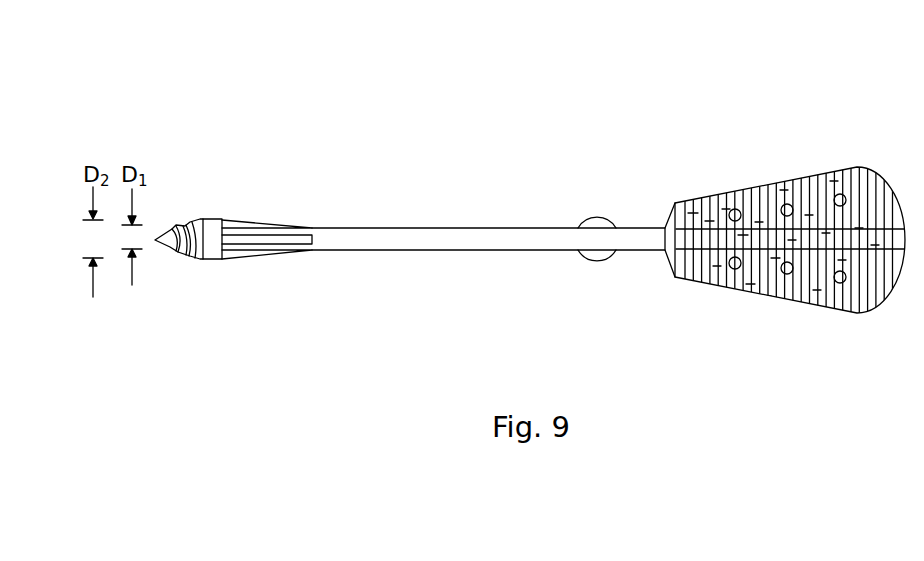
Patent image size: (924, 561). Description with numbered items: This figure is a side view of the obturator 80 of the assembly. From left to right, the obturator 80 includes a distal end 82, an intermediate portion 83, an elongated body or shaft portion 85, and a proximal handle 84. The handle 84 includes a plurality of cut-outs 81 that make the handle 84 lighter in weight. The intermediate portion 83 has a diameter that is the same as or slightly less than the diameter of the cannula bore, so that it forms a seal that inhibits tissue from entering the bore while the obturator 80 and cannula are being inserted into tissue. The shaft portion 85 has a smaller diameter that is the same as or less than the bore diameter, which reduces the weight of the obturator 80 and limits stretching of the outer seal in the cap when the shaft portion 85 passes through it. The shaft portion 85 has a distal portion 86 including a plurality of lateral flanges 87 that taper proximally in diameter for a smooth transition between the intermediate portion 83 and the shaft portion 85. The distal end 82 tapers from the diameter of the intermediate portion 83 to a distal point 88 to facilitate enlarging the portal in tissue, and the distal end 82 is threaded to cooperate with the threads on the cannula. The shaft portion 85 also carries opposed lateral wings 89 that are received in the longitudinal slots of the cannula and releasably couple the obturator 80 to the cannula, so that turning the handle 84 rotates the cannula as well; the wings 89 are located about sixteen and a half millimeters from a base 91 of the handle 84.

The obturator 80 is at (529, 114).
The cut-outs 81 is at (812, 170).
The distal end 82 is at (197, 218).
The intermediate portion 83 is at (218, 220).
The proximal handle 84 is at (773, 182).
The shaft portion 85 is at (422, 226).
The distal portion 86 is at (289, 258).
The lateral flanges 87 is at (253, 262).
The distal point 88 is at (157, 246).
The lateral wings 89 is at (592, 216).
The base 91 is at (675, 272).